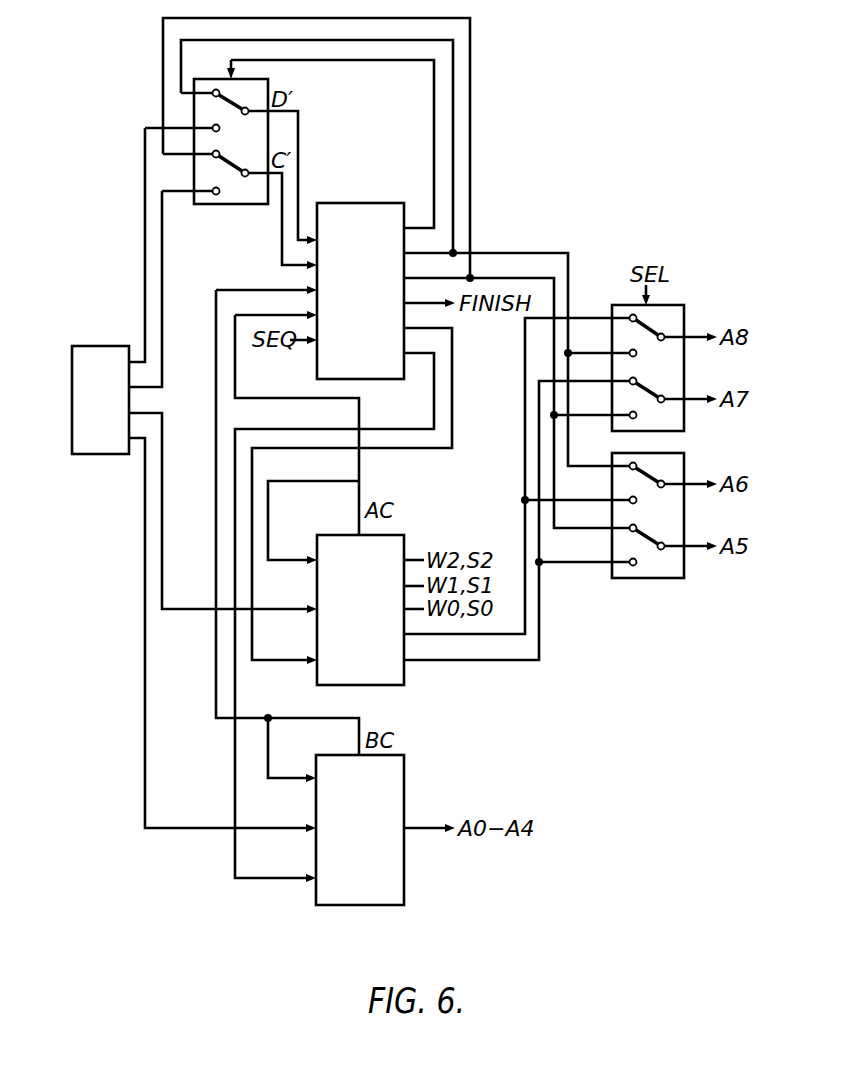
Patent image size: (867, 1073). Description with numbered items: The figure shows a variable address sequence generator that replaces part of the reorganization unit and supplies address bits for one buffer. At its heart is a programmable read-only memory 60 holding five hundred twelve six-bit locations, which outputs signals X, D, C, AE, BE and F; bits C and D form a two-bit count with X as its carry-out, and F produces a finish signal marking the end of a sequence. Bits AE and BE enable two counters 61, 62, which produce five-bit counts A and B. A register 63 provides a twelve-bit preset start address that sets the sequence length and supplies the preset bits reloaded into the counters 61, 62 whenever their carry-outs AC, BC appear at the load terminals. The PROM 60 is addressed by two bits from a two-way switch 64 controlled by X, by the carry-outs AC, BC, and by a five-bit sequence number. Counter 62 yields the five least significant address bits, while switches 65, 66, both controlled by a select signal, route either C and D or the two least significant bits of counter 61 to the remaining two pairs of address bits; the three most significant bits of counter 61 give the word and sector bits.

The programmable read-only memory (PROM) 60 is at (369, 203).
The counter 61 is at (383, 686).
The counter 62 is at (386, 905).
The register 63 is at (110, 457).
The two-way switch 64 is at (231, 204).
The switch 65 is at (667, 579).
The switch 66 is at (670, 305).